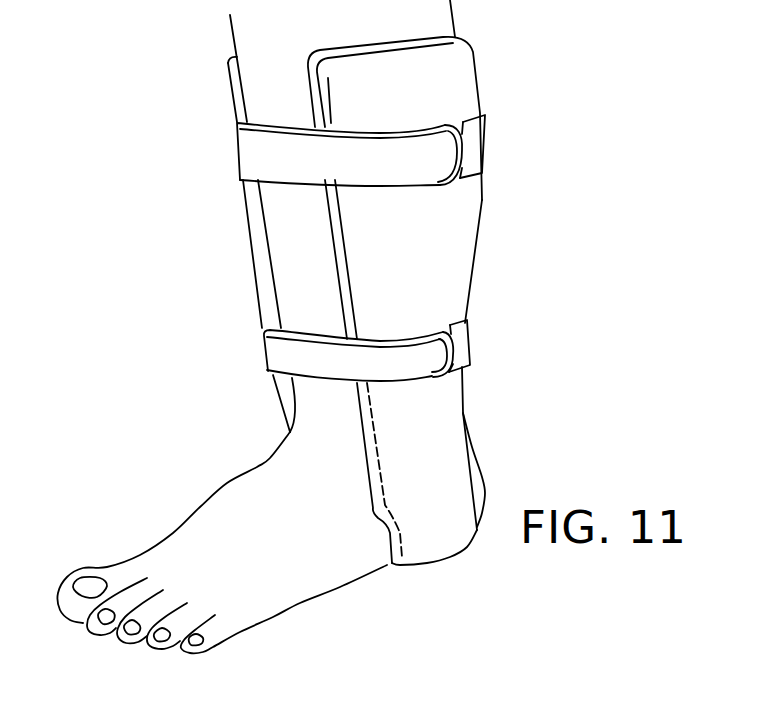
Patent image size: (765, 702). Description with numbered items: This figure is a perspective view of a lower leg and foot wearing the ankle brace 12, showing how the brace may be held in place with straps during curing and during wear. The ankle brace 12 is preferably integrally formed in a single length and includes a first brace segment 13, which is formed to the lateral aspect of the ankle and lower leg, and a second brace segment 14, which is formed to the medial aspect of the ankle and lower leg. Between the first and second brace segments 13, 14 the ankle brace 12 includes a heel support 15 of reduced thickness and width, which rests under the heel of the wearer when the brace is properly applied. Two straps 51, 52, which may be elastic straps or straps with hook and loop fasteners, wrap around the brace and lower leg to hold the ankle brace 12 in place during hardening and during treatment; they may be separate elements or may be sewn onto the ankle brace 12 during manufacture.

The ankle brace 12 is at (240, 265).
The first brace segment 13 is at (463, 240).
The second brace segment 14 is at (238, 97).
The heel support 15 is at (402, 567).
The strap 51 is at (473, 135).
The strap 52 is at (463, 343).